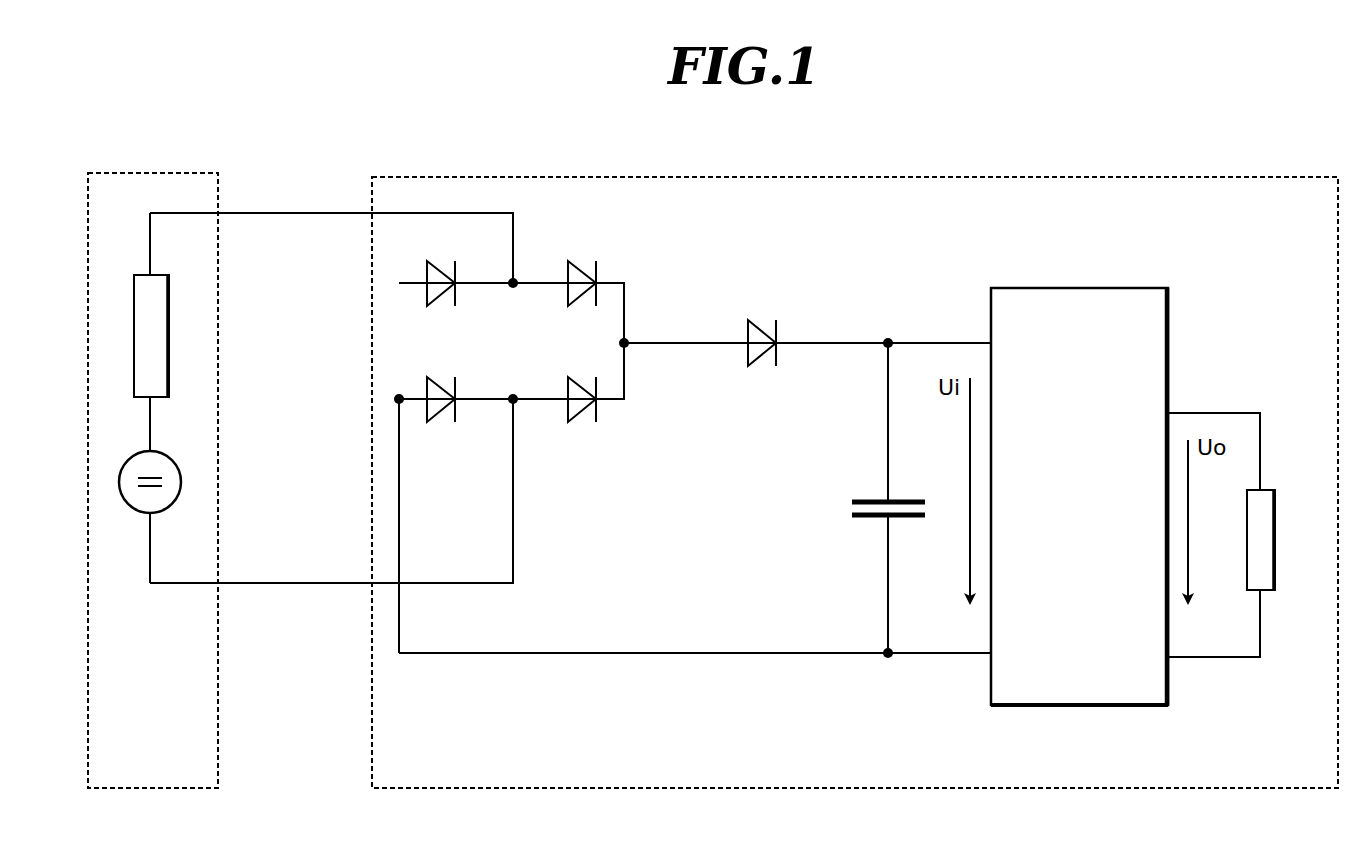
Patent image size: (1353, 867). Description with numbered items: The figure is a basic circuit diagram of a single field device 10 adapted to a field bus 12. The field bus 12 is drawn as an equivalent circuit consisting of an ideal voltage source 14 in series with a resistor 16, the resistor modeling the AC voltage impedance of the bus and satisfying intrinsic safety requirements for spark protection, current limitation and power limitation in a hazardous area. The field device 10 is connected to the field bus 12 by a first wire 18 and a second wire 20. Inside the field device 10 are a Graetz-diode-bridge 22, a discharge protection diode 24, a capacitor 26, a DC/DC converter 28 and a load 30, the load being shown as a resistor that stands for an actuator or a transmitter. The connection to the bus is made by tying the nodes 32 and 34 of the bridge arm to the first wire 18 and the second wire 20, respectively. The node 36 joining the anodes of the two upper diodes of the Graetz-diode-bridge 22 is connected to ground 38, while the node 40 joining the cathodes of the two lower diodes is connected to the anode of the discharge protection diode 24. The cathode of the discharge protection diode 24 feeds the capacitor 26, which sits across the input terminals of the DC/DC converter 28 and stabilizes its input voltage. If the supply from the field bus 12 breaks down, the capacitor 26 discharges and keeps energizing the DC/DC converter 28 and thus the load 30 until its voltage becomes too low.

The field device 10 is at (1306, 177).
The field bus 12 is at (193, 173).
The ideal voltage source 14 is at (168, 454).
The resistor 16 is at (167, 366).
The first wire 18 is at (283, 213).
The second wire 20 is at (274, 585).
The Graetz-diode-bridge 22 is at (663, 265).
The discharge protection diode 24 is at (779, 340).
The capacitor 26 is at (860, 500).
The DC/DC converter 28 is at (1131, 288).
The load 30 is at (1277, 559).
The node 32 is at (518, 276).
The node 34 is at (515, 396).
The node 36 is at (401, 396).
The ground 38 is at (811, 652).
The node 40 is at (627, 342).